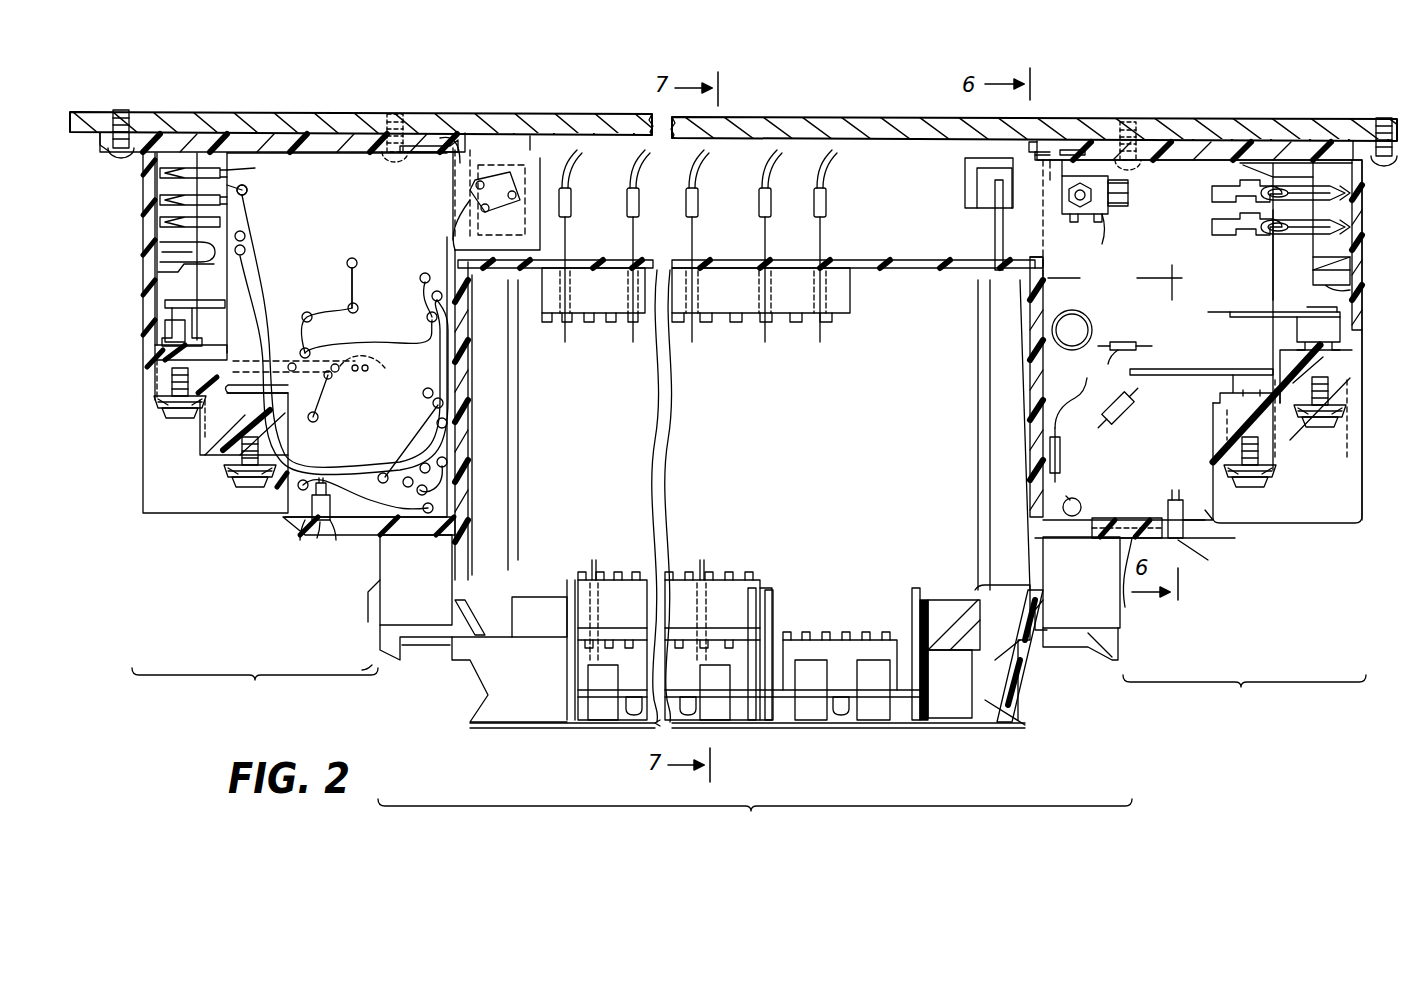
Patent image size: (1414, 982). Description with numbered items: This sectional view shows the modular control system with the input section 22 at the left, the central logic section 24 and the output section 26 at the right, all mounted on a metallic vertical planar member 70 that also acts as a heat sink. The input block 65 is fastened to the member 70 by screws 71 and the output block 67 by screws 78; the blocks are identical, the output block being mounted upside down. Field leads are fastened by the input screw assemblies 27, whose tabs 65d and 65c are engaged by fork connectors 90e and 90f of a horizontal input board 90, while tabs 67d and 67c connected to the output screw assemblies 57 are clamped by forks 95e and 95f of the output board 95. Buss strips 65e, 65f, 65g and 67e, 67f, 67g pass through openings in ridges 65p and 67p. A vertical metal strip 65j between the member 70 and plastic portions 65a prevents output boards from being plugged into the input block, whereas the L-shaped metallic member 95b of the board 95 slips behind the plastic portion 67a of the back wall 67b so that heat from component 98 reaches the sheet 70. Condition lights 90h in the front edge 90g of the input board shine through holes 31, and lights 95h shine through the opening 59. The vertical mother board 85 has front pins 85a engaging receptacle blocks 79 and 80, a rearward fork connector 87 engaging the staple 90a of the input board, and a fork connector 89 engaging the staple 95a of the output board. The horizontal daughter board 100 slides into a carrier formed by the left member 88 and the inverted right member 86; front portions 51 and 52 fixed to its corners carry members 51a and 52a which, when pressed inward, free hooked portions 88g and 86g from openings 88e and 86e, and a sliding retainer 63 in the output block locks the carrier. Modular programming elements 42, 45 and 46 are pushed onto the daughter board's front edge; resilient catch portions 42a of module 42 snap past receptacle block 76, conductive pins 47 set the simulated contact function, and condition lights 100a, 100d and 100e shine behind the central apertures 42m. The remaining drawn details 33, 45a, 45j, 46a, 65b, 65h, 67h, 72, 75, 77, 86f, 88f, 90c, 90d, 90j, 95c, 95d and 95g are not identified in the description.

The input section 22 is at (255, 689).
The logic section 24 is at (755, 821).
The output section 26 is at (1244, 695).
The screw assemblies 27 is at (175, 422).
The holes 31 is at (307, 555).
The base plate 33 is at (369, 535).
The modular programming unit 42 is at (590, 722).
The resilient horizontal catch portions 42a is at (595, 690).
The central apertures 42m is at (665, 740).
The modular programming unit 45 is at (795, 727).
The partition plate 45a is at (754, 602).
The electrical components 45j is at (1118, 387).
The modular programming unit 46 is at (917, 728).
The support member 46a is at (887, 642).
The conductive pins 47 is at (594, 558).
The front portion 51 is at (510, 730).
The member 51a is at (478, 640).
The front portion 52 is at (987, 715).
The member 52a is at (1013, 690).
The output screw assemblies 57 is at (1278, 473).
The holes 59 is at (1205, 542).
The sliding retainer 63 is at (1138, 580).
The input block 65 is at (137, 354).
The plastic portions 65a is at (443, 160).
The housing top wall 65b is at (323, 151).
The tab 65c is at (230, 400).
The tab 65d is at (164, 322).
The buss strip 65e is at (160, 175).
The buss strip 65f is at (160, 206).
The buss strip 65g is at (160, 249).
The housing post 65h is at (453, 142).
The vertical metal strip 65j is at (435, 95).
The ridges 65p is at (158, 272).
The output block 67 is at (1403, 343).
The plastic portions 67a is at (1037, 152).
The back wall 67b is at (1128, 185).
The tab 67c is at (1238, 386).
The tab 67d is at (1297, 326).
The buss strip 67e is at (1360, 194).
The buss strip 67f is at (1360, 230).
The buss strip 67g is at (1358, 290).
The frame tab 67h is at (1048, 150).
The ridges 67p is at (1358, 264).
The metallic vertical planar member 70 is at (870, 122).
The screws 71 is at (126, 110).
The circuit module 72 is at (612, 581).
The circuit module 75 is at (687, 581).
The receptacle block 76 is at (634, 645).
The module housing 77 is at (718, 645).
The screws 78 is at (1386, 120).
The receptacle block 79 is at (612, 307).
The rear receptacle block 80 is at (740, 307).
The mother board 85 is at (900, 260).
The front horizontal pins 85a is at (630, 332).
The right member 86 is at (1030, 412).
The opening 86e is at (1043, 592).
The hooked portion 86g is at (1042, 628).
The wall lip 86f is at (1091, 628).
The fork connectors 87 is at (506, 258).
The left member 88 is at (468, 432).
The opening 88e is at (452, 590).
The wall flange 88f is at (382, 585).
The hooked portion 88g is at (458, 628).
The fork connectors 89 is at (995, 227).
The input board 90 is at (375, 431).
The staple 90a is at (535, 118).
The board connector 90c is at (234, 181).
The board terminal 90d is at (248, 198).
The fork connector 90e is at (193, 311).
The fork connector 90f is at (364, 367).
The front edges 90g is at (335, 538).
The condition lights 90h is at (297, 518).
The board wire 90j is at (352, 310).
The output board 95 is at (1065, 218).
The staple 95a is at (977, 189).
The L-shaped metallic member 95b is at (1067, 150).
The terminal 95c is at (1212, 200).
The post 95d is at (1230, 255).
The horizontal connecting fork 95e is at (1256, 308).
The horizontal connecting fork 95f is at (1210, 372).
The bottom plate 95g is at (1185, 500).
The lights 95h is at (1166, 510).
The circuit component 98 is at (1115, 235).
The daughter board 100 is at (850, 401).
The condition light 100a is at (632, 715).
The condition light 100d is at (690, 722).
The condition light 100e is at (840, 723).